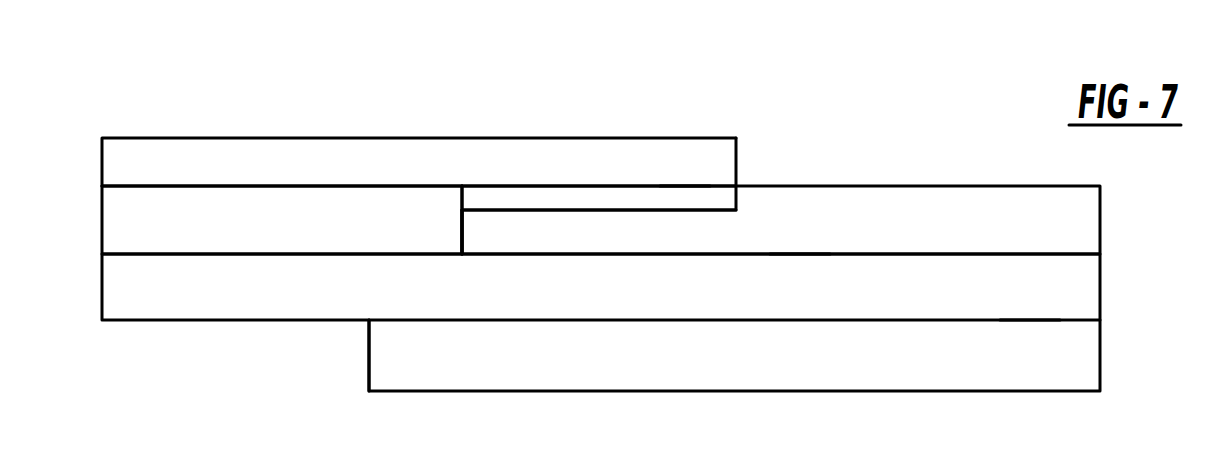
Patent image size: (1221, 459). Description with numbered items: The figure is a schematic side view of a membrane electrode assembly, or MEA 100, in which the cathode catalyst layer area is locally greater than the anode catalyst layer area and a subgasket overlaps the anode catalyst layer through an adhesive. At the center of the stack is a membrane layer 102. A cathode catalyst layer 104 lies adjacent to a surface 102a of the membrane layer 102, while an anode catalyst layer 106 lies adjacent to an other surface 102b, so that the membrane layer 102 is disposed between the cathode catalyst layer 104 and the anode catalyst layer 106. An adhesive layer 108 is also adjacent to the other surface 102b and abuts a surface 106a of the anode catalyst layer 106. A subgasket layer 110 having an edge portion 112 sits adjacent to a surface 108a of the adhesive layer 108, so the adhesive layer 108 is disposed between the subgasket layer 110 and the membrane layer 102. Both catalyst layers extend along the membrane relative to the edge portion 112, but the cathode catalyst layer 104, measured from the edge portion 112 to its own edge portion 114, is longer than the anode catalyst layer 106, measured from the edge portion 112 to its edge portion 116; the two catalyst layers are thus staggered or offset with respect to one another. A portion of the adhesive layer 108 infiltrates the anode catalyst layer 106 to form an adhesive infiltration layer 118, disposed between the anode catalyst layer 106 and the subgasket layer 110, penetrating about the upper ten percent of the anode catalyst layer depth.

The MEA 100 is at (940, 153).
The membrane layer 102 is at (1075, 287).
The surface of the membrane layer 102a is at (1027, 320).
The other surface of the membrane layer 102b is at (797, 254).
The cathode catalyst layer 104 is at (1080, 358).
The anode catalyst layer 106 is at (1078, 220).
The surface of the anode catalyst layer 106a is at (463, 233).
The adhesive layer 108 is at (115, 220).
The surface of the adhesive layer 108a is at (382, 187).
The subgasket layer 110 is at (150, 153).
The edge portion of the subgasket layer 112 is at (736, 163).
The edge portion of the cathode catalyst layer 114 is at (369, 357).
The edge portion of the anode catalyst layer 116 is at (459, 216).
The adhesive infiltration layer 118 is at (685, 197).